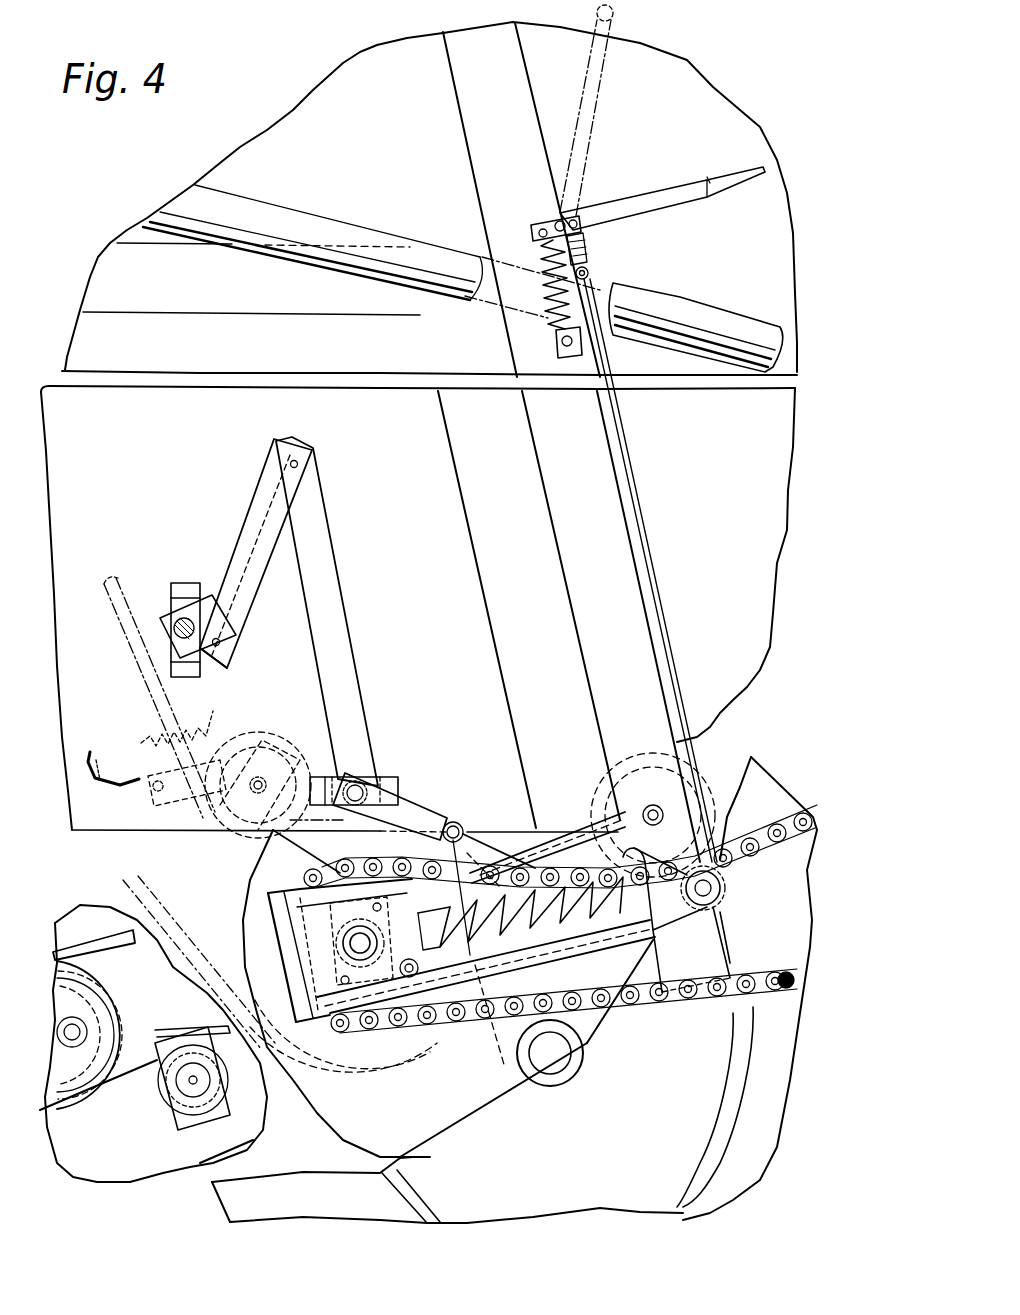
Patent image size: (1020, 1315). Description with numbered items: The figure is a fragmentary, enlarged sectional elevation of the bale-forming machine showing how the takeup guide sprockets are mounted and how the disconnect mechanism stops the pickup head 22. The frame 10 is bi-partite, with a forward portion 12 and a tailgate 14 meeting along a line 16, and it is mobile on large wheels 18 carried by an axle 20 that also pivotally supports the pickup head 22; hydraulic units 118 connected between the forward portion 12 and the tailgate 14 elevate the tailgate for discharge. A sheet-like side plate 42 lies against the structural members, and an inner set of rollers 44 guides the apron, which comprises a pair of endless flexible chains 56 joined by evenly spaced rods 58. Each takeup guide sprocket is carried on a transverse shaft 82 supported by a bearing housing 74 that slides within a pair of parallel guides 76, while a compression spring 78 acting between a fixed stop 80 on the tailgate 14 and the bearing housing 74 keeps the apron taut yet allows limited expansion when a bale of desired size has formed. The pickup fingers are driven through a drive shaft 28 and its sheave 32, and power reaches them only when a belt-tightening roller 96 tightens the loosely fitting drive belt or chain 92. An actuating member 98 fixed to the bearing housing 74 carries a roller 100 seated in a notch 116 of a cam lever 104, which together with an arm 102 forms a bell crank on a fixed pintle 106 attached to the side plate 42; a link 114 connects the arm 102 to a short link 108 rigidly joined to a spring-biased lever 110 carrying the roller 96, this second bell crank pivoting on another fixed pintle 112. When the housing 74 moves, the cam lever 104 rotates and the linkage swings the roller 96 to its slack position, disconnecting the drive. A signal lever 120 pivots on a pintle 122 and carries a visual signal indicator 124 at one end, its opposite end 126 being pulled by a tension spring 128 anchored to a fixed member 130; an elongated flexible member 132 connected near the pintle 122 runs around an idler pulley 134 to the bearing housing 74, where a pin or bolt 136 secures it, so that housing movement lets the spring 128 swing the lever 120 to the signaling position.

The frame 10 is at (308, 84).
The forward portion 12 is at (485, 515).
The tailgate 14 is at (610, 452).
The line 16 is at (552, 516).
The wheels 18 is at (753, 1163).
The axle 20 is at (553, 1068).
The pickup head 22 is at (110, 1168).
The drive shaft 28 is at (76, 1043).
The sheave 32 is at (108, 1012).
The side plates 42 is at (418, 609).
The inner set of rollers 44 is at (708, 773).
The endless flexible chains 56 is at (710, 997).
The rods 58 is at (787, 817).
The bearing housing 74 is at (270, 911).
The parallel guides 76 is at (567, 847).
The compression spring 78 is at (448, 985).
The fixed stop 80 is at (650, 821).
The transverse shaft 82 is at (362, 952).
The drive belt or chain 92 is at (120, 877).
The belt-tightening roller 96 is at (306, 736).
The actuating member 98 is at (427, 893).
The roller 100 is at (453, 823).
The arm 102 is at (333, 596).
The cam lever 104 is at (404, 800).
The fixed pintle 106 is at (363, 790).
The short link 108 is at (228, 664).
The spring-biased lever 110 is at (249, 711).
The fixed pintle 112 is at (175, 620).
The link 114 is at (258, 531).
The notch 116 is at (462, 826).
The hydraulic units 118 is at (262, 213).
The lever 120 is at (610, 213).
The pintle 122 is at (540, 213).
The visual signal indicator 124 is at (615, 15).
The end 126 is at (533, 233).
The tension spring 128 is at (553, 283).
The fixed member 130 is at (560, 340).
The elongated flexible member 132 is at (653, 577).
The idler pulley 134 is at (587, 247).
The pin or bolt 136 is at (409, 978).